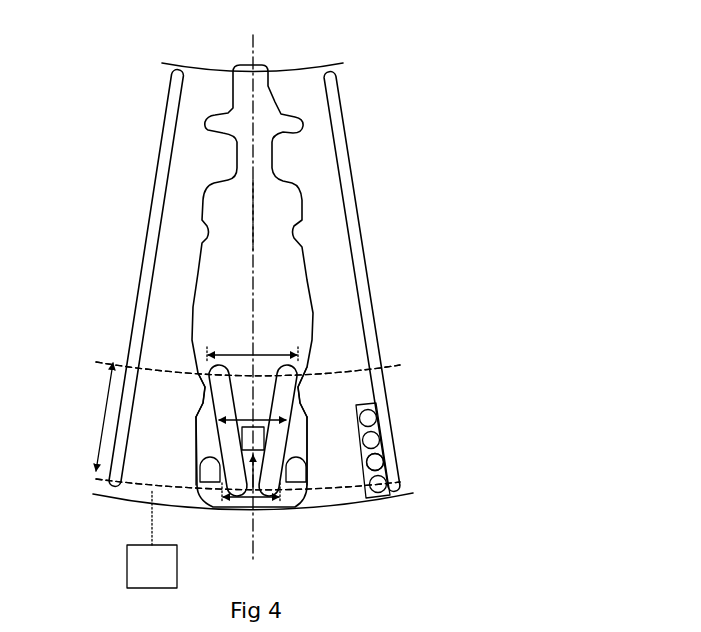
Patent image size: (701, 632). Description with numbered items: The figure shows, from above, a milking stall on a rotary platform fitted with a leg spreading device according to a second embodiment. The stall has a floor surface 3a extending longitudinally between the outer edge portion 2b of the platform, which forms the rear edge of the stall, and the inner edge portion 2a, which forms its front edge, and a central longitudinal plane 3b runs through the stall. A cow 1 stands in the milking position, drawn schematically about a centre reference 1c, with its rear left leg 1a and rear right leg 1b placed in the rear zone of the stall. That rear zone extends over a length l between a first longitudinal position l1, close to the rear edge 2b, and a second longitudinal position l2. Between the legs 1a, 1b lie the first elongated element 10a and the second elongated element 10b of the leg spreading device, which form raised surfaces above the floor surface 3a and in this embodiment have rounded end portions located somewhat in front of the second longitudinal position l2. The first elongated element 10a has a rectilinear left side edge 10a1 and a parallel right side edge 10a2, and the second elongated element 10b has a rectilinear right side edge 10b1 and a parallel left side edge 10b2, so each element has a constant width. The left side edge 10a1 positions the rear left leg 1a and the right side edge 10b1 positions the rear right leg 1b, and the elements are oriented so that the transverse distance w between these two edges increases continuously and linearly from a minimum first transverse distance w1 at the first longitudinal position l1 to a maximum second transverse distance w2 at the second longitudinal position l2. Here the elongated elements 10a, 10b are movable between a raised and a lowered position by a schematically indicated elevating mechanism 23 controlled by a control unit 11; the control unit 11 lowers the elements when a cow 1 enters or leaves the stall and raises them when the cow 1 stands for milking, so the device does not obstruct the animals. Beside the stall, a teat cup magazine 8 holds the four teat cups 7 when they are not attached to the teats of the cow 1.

The cow 1 is at (280, 240).
The rear left leg 1a is at (212, 470).
The rear right leg 1b is at (296, 471).
The longitudinal axis of container 1c is at (252, 212).
The inner edge portion of the platform 2a is at (199, 67).
The outer edge portion of the platform 2b is at (348, 503).
The floor surface 3a is at (308, 155).
The central longitudinal plane 3b is at (251, 53).
The teat cup 7 is at (376, 462).
The teat cup magazine 8 is at (373, 427).
The first elongated element 10a is at (222, 388).
The second elongated element 10b is at (277, 392).
The left side edge of the first elongated element 10a1 is at (214, 435).
The right side edge of the first elongated element 10a2 is at (213, 402).
The right side edge of the second elongated element 10b1 is at (291, 437).
The left side edge of the second elongated element 10b2 is at (293, 403).
The control unit 11 is at (140, 563).
The elevating mechanism 23 is at (253, 438).
The transverse distance w is at (252, 407).
The first transverse distance w1 is at (244, 500).
The second transverse distance w2 is at (268, 354).
The length of holding cell l is at (99, 417).
The first longitudinal position l1 is at (132, 482).
The second longitudinal position l2 is at (153, 368).